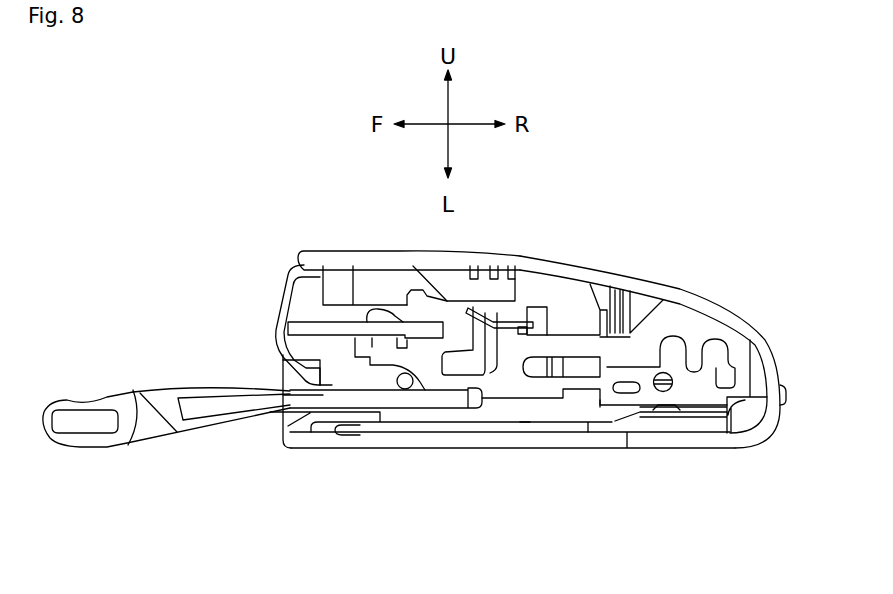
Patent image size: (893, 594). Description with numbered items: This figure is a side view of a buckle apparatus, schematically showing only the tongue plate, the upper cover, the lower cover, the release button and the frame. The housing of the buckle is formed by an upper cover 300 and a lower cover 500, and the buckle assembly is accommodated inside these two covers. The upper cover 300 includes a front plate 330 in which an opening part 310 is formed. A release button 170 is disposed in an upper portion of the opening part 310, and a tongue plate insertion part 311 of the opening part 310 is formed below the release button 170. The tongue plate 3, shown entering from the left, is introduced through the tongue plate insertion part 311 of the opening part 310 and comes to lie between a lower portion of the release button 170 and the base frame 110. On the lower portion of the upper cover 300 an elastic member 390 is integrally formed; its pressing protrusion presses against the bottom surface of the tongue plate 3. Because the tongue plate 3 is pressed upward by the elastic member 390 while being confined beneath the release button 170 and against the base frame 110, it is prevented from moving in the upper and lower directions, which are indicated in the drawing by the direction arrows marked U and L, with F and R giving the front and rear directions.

The upper cover 300 is at (566, 260).
The opening part 310 is at (296, 266).
The tongue plate insertion part 311 is at (283, 388).
The front plate 330 is at (320, 442).
The elastic member 390 is at (360, 432).
The release button 170 is at (305, 302).
The base frame 110 is at (605, 348).
The lower cover 500 is at (586, 443).
The tongue plate 3 is at (273, 403).